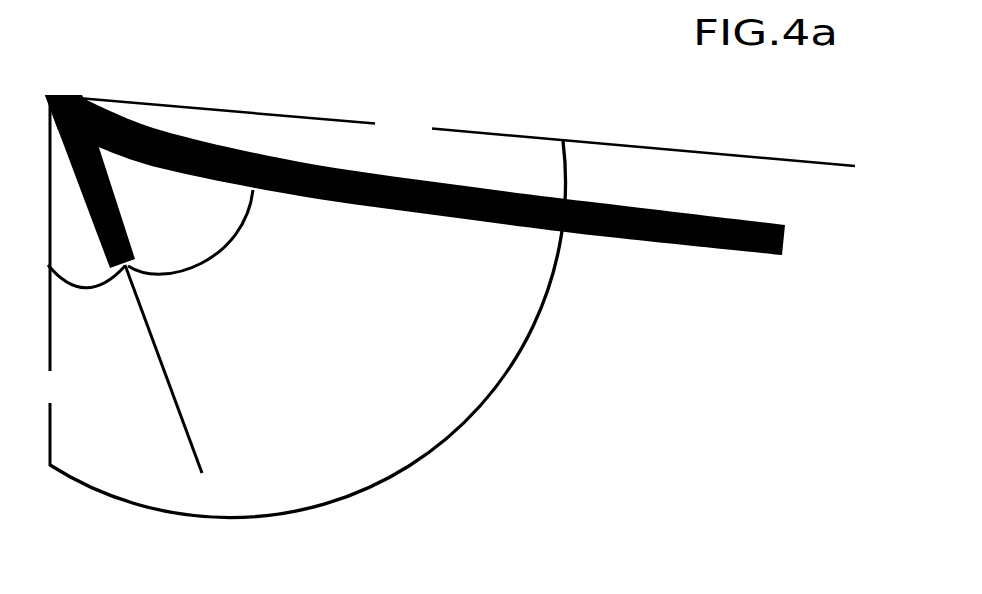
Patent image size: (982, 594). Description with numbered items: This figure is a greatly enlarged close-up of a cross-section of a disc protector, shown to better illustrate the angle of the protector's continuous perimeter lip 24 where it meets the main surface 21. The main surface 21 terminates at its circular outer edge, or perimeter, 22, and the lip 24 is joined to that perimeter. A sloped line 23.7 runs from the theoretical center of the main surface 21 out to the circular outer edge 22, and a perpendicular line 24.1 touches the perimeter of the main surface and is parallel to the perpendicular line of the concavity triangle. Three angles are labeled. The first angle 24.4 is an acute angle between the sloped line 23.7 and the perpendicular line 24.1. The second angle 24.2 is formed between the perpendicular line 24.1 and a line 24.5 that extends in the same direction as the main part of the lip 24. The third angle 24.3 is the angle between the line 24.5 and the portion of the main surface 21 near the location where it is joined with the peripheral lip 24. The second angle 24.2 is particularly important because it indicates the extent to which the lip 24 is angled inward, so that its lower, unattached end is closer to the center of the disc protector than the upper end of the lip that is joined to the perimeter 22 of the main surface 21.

The main surface 21 is at (647, 243).
The circular outer edge 22 is at (62, 93).
The sloped line 23.7 is at (466, 132).
The continuous perimeter lip 24 is at (127, 231).
The perpendicular line 24.1 is at (50, 282).
The second angle 24.2 is at (88, 290).
The third angle 24.3 is at (222, 251).
The first angle 24.4 is at (478, 415).
The lip direction line 24.5 is at (193, 442).